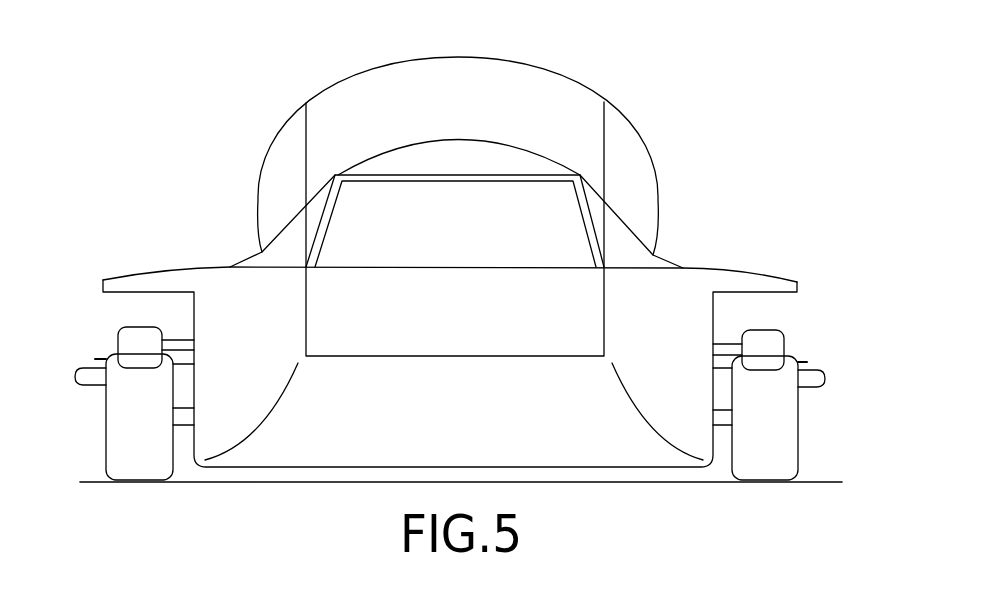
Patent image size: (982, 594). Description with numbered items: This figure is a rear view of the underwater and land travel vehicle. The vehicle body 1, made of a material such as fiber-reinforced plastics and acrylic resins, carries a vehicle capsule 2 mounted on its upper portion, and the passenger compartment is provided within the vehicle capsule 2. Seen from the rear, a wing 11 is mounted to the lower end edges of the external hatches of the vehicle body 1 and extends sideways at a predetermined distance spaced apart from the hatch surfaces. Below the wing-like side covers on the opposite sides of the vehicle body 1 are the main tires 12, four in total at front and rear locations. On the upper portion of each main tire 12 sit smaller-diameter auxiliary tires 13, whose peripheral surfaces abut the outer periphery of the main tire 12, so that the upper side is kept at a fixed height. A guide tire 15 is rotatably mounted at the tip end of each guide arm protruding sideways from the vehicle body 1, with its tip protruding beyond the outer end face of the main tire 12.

The vehicle body 1 is at (695, 280).
The vehicle capsule 2 is at (627, 145).
The wing 11 is at (470, 177).
The main tire 12 is at (113, 435).
The auxiliary tire 13 is at (137, 338).
The guide tire 15 is at (83, 375).